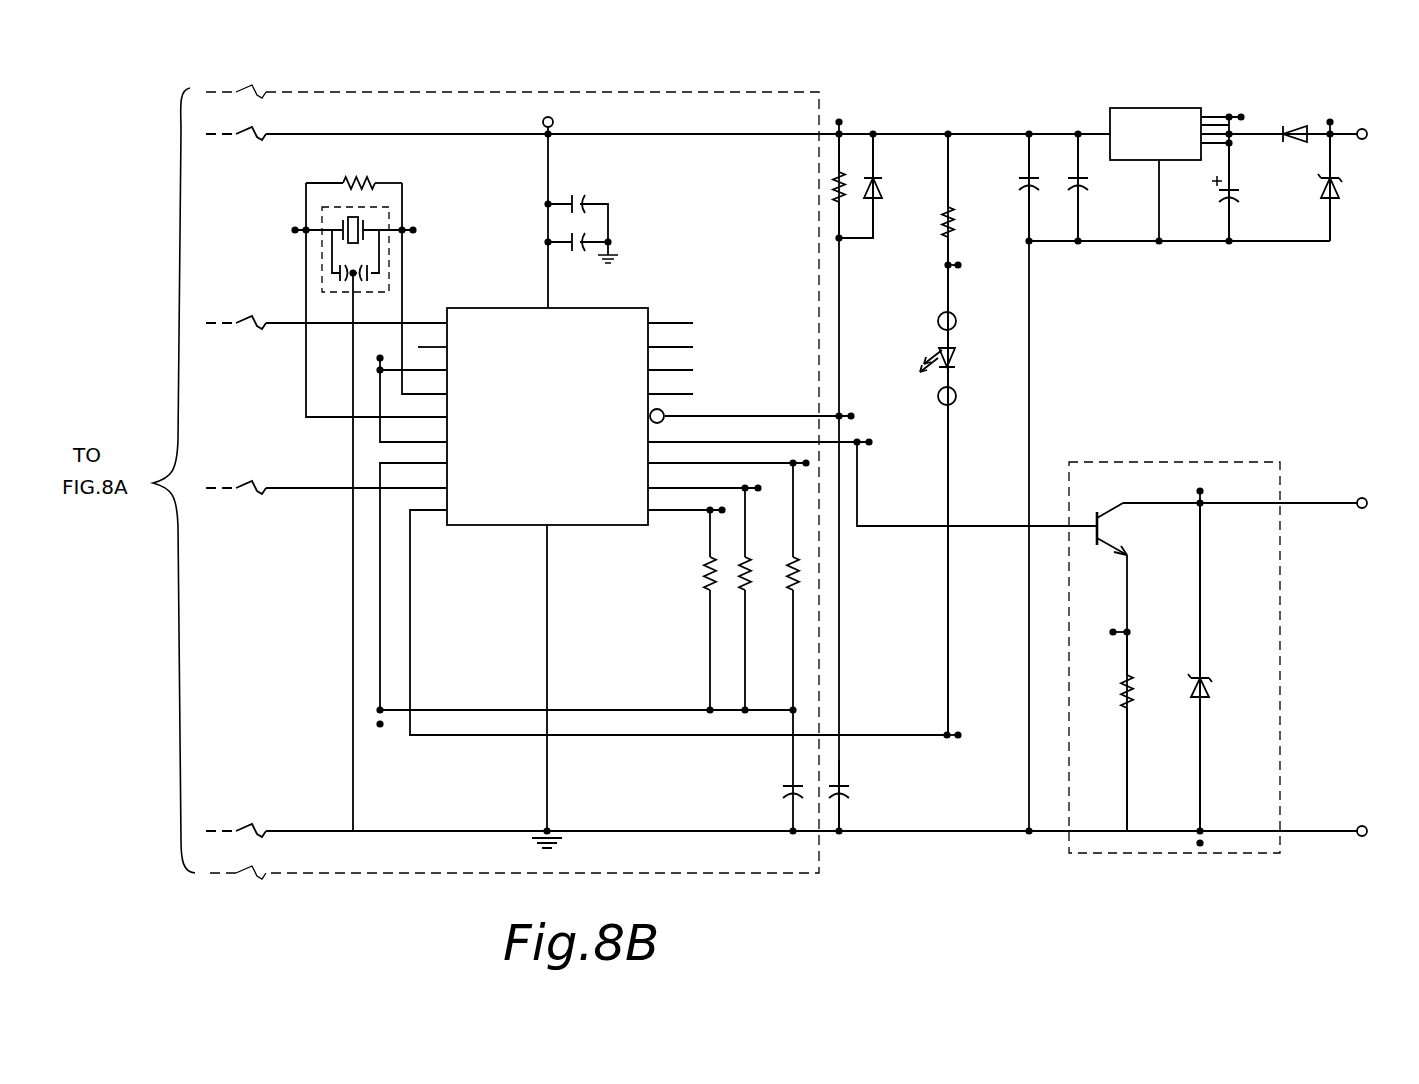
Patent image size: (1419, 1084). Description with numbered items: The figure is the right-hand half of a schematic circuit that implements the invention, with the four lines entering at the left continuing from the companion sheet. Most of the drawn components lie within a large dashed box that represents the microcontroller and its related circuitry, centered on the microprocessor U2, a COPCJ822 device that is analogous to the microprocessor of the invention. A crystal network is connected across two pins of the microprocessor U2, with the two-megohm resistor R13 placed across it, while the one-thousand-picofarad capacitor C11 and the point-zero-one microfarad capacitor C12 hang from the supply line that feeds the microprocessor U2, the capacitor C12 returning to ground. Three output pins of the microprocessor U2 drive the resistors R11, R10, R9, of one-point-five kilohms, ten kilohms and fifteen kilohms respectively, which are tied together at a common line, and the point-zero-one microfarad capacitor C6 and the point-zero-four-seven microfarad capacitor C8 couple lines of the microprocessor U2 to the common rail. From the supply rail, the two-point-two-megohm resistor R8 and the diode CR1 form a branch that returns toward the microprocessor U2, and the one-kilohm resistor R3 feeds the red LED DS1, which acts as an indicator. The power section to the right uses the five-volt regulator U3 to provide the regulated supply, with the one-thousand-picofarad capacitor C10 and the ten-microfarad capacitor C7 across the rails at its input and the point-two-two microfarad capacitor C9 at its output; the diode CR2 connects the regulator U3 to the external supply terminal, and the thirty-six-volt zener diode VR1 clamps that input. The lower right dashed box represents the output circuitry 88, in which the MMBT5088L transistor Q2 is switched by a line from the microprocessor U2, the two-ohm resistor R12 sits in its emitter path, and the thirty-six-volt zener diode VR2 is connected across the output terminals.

The resistor R13 is at (343, 180).
The capacitor C11 is at (582, 196).
The capacitor C12 is at (588, 255).
The microprocessor U2 is at (556, 415).
The resistor R11 is at (704, 574).
The resistor R10 is at (751, 558).
The resistor R9 is at (787, 596).
The capacitor C6 is at (782, 794).
The capacitor C8 is at (850, 794).
The resistor R8 is at (832, 187).
The diode CR1 is at (880, 194).
The resistor R3 is at (955, 222).
The red LED DS1 is at (955, 352).
The capacitor C10 is at (1018, 182).
The capacitor C7 is at (1088, 188).
The 5 volt regulator U3 is at (1155, 134).
The capacitor C9 is at (1240, 202).
The diode CR2 is at (1296, 126).
The zener diode VR1 is at (1339, 191).
The output circuitry 88 is at (1158, 468).
The transistor Q2 is at (1110, 530).
The resistor R12 is at (1121, 690).
The zener diode VR2 is at (1208, 686).